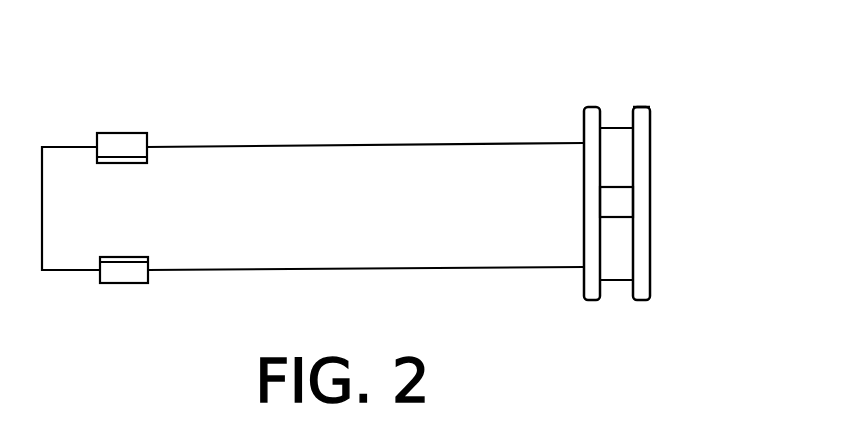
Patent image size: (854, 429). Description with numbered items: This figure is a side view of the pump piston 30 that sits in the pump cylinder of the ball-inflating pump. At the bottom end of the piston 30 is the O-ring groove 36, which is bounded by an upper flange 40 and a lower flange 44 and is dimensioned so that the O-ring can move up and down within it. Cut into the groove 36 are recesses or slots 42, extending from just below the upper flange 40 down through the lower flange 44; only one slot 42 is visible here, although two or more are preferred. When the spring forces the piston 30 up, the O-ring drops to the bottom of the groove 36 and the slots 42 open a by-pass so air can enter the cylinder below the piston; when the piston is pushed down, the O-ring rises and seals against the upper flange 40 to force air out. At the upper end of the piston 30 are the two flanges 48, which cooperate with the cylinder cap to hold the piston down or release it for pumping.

The pump piston 30 is at (367, 157).
The O-ring groove 36 is at (615, 117).
The upper flange 40 is at (590, 107).
The slots 42 is at (627, 202).
The lower flange 44 is at (650, 127).
The flanges 48 is at (122, 143).